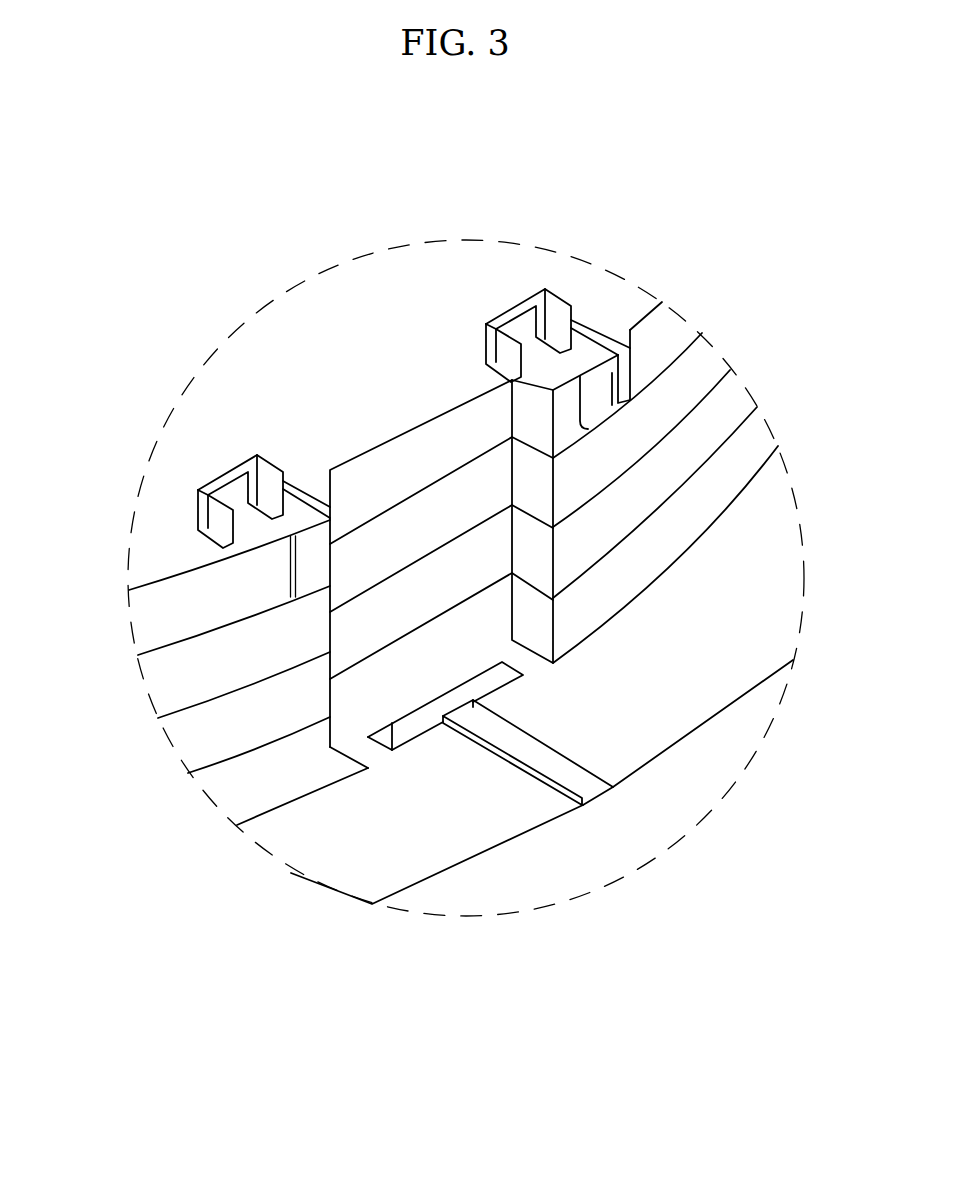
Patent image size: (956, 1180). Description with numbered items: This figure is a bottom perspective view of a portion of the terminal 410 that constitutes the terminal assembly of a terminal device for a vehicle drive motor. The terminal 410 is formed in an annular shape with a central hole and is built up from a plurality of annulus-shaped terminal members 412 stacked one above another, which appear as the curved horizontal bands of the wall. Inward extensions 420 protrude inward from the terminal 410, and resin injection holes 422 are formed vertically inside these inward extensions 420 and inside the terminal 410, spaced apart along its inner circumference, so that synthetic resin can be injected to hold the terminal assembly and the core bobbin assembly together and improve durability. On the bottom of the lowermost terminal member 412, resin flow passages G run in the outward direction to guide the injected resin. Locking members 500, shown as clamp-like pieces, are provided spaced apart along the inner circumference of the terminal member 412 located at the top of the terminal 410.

The terminal 410 is at (393, 420).
The terminal member 412 is at (383, 835).
The inward extension 420 is at (373, 688).
The resin injection hole 422 is at (417, 723).
The locking member 500 is at (568, 300).
The resin flow passage G is at (555, 767).